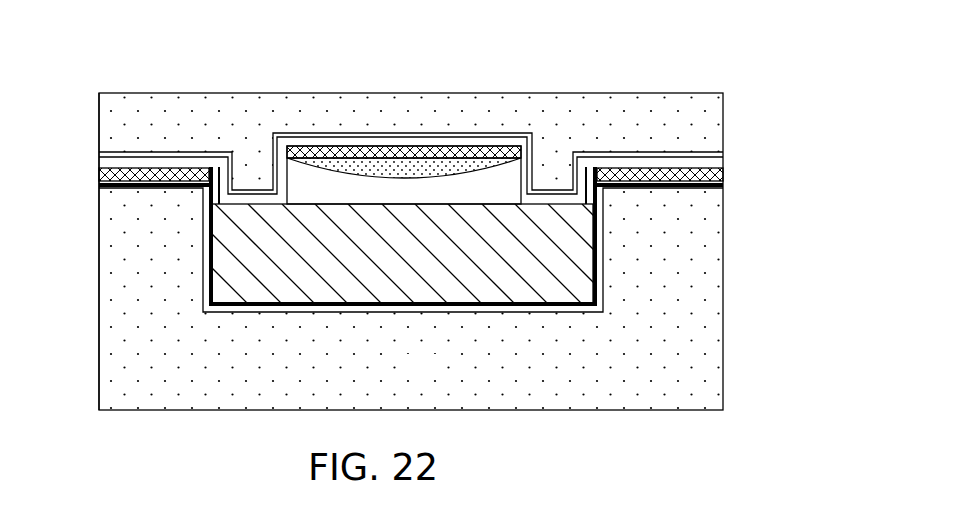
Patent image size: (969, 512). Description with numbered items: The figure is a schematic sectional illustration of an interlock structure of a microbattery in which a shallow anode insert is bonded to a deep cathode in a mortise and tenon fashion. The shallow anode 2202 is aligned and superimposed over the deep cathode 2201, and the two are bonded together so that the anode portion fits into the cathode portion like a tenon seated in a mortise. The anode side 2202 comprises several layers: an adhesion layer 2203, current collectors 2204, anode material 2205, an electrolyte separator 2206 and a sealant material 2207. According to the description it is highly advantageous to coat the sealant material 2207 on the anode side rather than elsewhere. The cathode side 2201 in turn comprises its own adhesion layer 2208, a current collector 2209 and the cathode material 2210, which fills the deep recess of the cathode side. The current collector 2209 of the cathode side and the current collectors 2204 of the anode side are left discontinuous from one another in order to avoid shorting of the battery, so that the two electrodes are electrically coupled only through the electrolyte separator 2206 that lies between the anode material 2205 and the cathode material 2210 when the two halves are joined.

The deep cathode 2201 is at (443, 378).
The shallow anode 2202 is at (600, 120).
The adhesion layer 2203 is at (723, 156).
The current collectors 2204 is at (723, 169).
The anode material 2205 is at (312, 153).
The electrolyte separator 2206 is at (365, 163).
The sealant material 2207 is at (98, 173).
The adhesion layer 2208 is at (590, 313).
The current collector 2209 is at (593, 298).
The cathode material 2210 is at (585, 252).